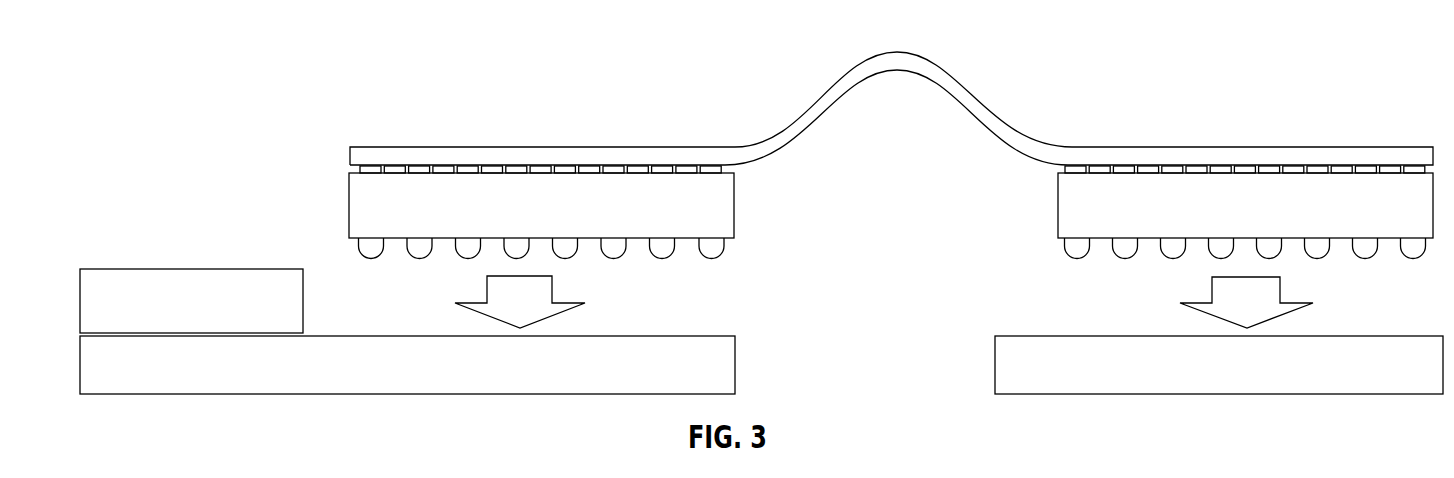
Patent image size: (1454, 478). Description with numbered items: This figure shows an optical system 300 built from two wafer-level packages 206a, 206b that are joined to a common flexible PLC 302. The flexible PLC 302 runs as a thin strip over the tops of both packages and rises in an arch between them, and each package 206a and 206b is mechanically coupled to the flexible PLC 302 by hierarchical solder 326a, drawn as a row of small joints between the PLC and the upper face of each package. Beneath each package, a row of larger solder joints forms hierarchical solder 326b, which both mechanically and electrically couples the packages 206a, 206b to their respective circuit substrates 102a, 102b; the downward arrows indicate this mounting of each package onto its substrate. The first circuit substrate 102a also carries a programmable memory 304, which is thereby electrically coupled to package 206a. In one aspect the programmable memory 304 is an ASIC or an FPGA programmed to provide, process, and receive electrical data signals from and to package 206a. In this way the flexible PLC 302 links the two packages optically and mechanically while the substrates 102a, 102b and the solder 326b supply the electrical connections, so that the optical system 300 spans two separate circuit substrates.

The optical system 300 is at (150, 52).
The flexible PLC 302 is at (360, 147).
The programmable memory 304 is at (212, 314).
The circuit substrate 102a is at (435, 378).
The circuit substrate 102b is at (1247, 378).
The wafer-level package 206a is at (570, 218).
The wafer-level package 206b is at (1272, 218).
The hierarchical solder 326a is at (1068, 169).
The hierarchical solder 326b is at (711, 246).